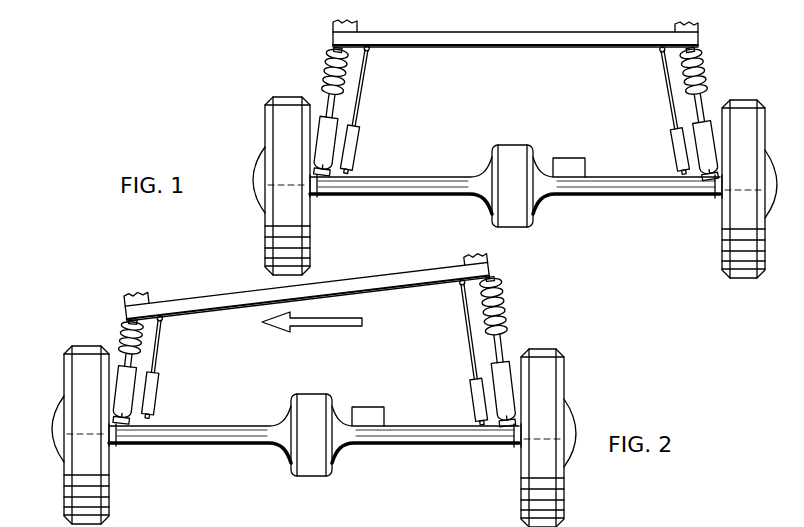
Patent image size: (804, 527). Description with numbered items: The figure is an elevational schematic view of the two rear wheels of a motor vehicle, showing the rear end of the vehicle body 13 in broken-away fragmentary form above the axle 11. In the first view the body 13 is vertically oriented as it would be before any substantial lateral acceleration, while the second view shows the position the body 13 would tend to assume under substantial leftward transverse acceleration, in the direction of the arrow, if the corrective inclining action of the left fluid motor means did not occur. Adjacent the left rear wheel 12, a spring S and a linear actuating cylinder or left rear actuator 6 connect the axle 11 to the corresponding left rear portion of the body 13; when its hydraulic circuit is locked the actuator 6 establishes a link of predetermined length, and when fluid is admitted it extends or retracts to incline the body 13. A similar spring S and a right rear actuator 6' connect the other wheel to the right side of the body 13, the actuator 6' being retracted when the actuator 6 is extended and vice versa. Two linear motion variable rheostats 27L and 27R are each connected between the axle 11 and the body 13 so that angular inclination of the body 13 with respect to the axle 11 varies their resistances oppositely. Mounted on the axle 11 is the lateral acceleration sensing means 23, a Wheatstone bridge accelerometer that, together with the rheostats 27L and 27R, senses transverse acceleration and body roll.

In FIG. 1, the vehicle body 13 is at (345, 37).
In FIG. 2, the vehicle body 13 is at (137, 313).
In FIG. 1, the left rear wheel 12 is at (286, 98).
In FIG. 2, the left rear wheel 12 is at (84, 374).
In FIG. 1, the spring S is at (333, 75).
In FIG. 2, the spring S is at (122, 341).
In FIG. 1, the left rear actuator 6 is at (353, 129).
In FIG. 2, the left rear actuator 6 is at (153, 378).
In FIG. 1, the left linear motion variable rheostat 27L is at (356, 134).
In FIG. 2, the left linear motion variable rheostat 27L is at (156, 391).
In FIG. 1, the axle 11 is at (332, 186).
In FIG. 2, the axle 11 is at (125, 434).
In FIG. 1, the lateral acceleration sensing means 23 is at (570, 168).
In FIG. 2, the lateral acceleration sensing means 23 is at (370, 420).
In FIG. 1, the right rear actuator 6' is at (718, 115).
In FIG. 2, the right rear actuator 6' is at (518, 371).
In FIG. 1, the right linear motion variable rheostat 27R is at (668, 140).
In FIG. 2, the right linear motion variable rheostat 27R is at (469, 393).